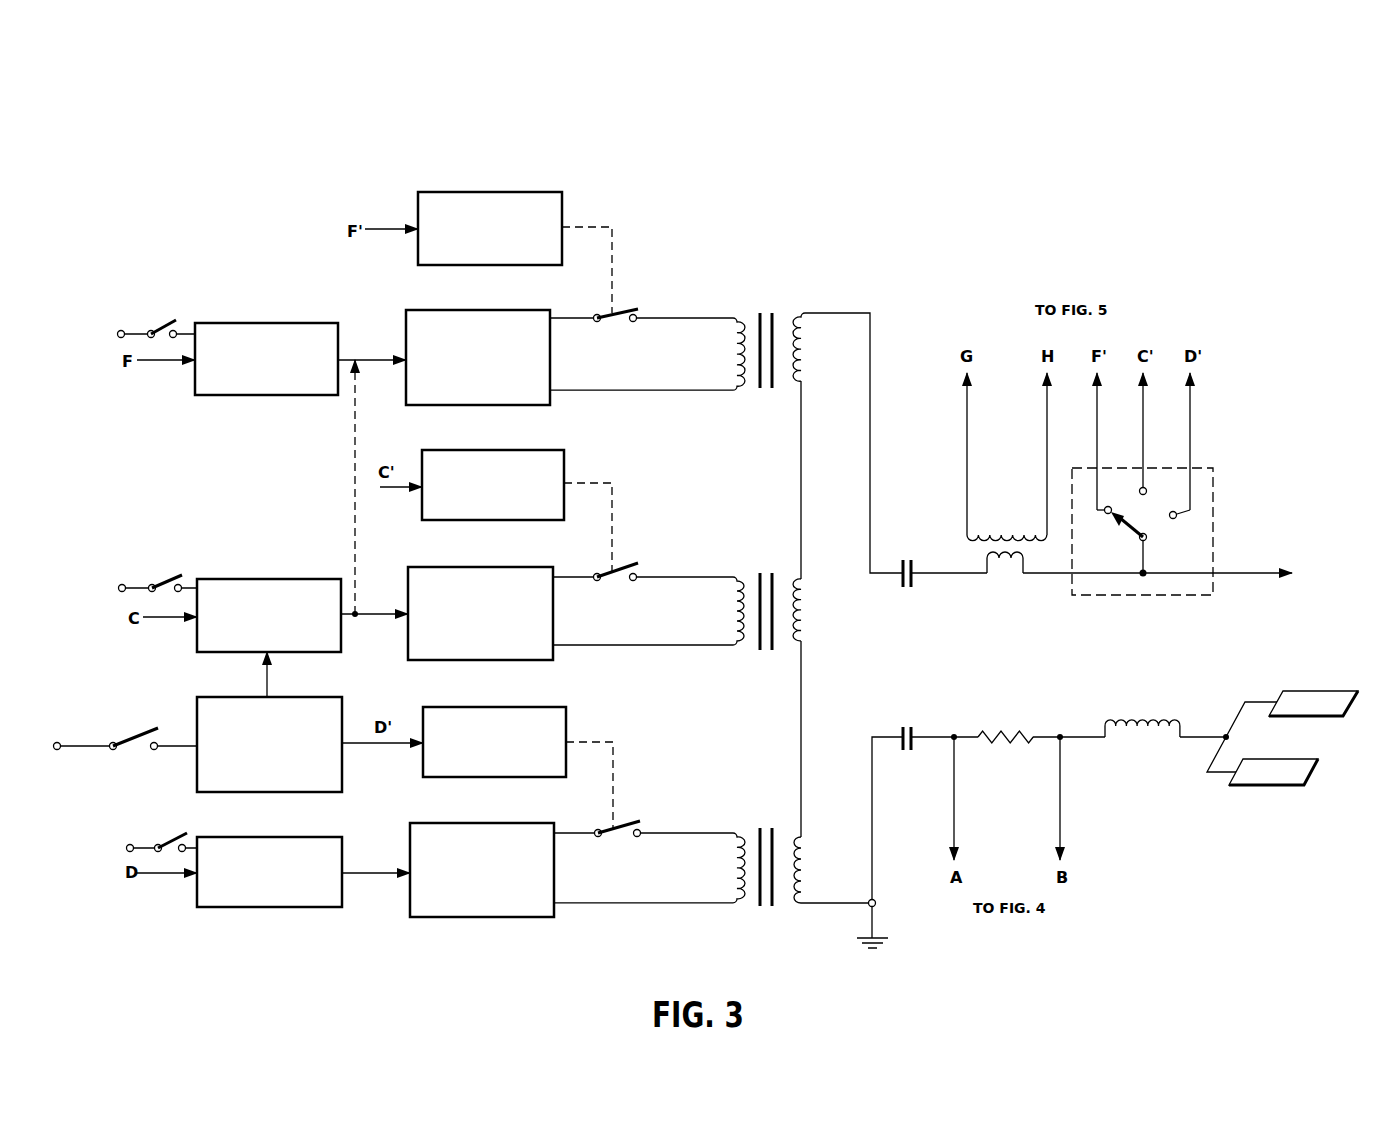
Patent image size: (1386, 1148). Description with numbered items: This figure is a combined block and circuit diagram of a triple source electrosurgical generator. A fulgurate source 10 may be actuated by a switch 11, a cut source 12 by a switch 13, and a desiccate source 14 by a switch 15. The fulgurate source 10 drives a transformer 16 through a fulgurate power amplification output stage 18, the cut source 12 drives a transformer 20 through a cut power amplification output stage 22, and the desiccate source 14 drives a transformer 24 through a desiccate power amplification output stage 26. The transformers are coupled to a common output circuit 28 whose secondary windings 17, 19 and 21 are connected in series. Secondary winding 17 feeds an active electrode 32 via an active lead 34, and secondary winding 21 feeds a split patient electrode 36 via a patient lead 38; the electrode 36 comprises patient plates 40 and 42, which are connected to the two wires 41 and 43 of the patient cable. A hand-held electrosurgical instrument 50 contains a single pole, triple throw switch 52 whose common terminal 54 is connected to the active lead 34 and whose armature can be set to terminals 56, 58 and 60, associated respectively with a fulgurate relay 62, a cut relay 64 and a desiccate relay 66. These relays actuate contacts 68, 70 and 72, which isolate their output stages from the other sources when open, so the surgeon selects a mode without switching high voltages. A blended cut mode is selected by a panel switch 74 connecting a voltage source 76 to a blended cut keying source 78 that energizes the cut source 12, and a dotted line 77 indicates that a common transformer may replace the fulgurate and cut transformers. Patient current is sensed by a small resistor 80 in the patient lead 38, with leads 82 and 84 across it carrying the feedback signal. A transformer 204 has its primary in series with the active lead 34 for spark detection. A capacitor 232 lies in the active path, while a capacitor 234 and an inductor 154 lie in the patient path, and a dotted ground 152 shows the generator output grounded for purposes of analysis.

The fulgurate source 10 is at (240, 332).
The switch 11 is at (164, 322).
The cut source 12 is at (258, 579).
The switch 13 is at (165, 578).
The desiccate source 14 is at (275, 895).
The switch 15 is at (171, 832).
The transformer 16 is at (702, 334).
The secondary winding 17 is at (802, 362).
The fulgurate power amplification output stage 18 is at (523, 321).
The secondary winding 19 is at (802, 611).
The transformer 20 is at (704, 592).
The secondary winding 21 is at (802, 853).
The cut power amplification output stage 22 is at (511, 578).
The transformer 24 is at (703, 851).
The desiccate power amplification output stage 26 is at (503, 837).
The common output circuit 28 is at (1021, 658).
The active electrode 32 is at (1270, 577).
The active cable or lead 34 is at (1050, 575).
The split patient electrode 36 is at (1278, 740).
The patient cable or lead 38 is at (1200, 734).
The patient plate 40 is at (1317, 700).
The wire 41 is at (1257, 700).
The patient plate 42 is at (1282, 778).
The wire 43 is at (1215, 775).
The hand-held electrosurgical instrument 50 is at (1164, 505).
The single pole, triple throw switch 52 is at (1128, 533).
The common terminal 54 is at (1147, 538).
The terminal 56 is at (1109, 505).
The terminal 58 is at (1145, 487).
The terminal 60 is at (1177, 519).
The fulgurate relay 62 is at (537, 203).
The cut relay 64 is at (516, 460).
The desiccate relay 66 is at (519, 716).
The contact 68 is at (634, 313).
The contact 70 is at (623, 560).
The contact 72 is at (627, 817).
The panel switch 74 is at (127, 735).
The voltage source 76 is at (57, 742).
The dotted line 77 is at (353, 453).
The blended cut keying source 78 is at (308, 704).
The resistor 80 is at (1013, 745).
The lead 82 is at (1062, 805).
The lead 84 is at (953, 813).
The ground 152 is at (876, 914).
The inductor 154 is at (1150, 718).
The transformer 204 is at (1007, 560).
The capacitor 232 is at (914, 560).
The capacitor 234 is at (918, 726).